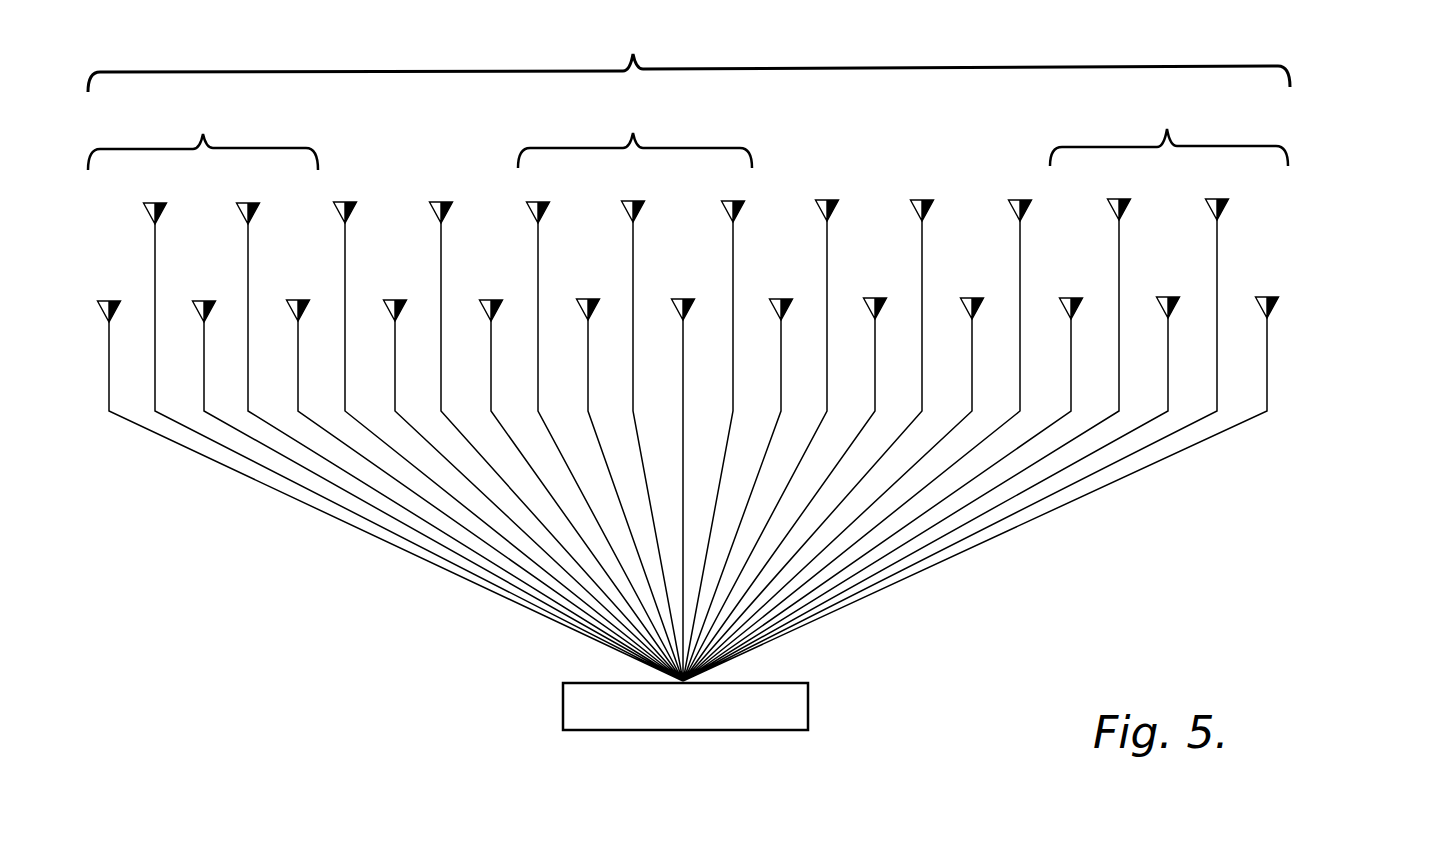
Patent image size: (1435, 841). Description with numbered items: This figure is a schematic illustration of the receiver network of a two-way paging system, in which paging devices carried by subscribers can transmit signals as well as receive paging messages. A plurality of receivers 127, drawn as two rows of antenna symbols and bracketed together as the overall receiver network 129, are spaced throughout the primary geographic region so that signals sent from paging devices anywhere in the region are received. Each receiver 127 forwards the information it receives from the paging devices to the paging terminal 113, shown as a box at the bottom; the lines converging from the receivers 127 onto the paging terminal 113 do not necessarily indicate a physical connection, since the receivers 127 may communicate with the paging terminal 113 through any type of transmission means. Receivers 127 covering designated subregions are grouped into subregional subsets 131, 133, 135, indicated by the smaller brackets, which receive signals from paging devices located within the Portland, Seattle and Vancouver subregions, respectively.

The paging terminal 113 is at (595, 731).
The receivers 127 is at (1303, 215).
The overall set of transmitters 129 is at (689, 57).
The subregional subset of receivers 131 is at (203, 137).
The subregional subset of receivers 133 is at (635, 135).
The subregional subset of receivers 135 is at (1169, 131).